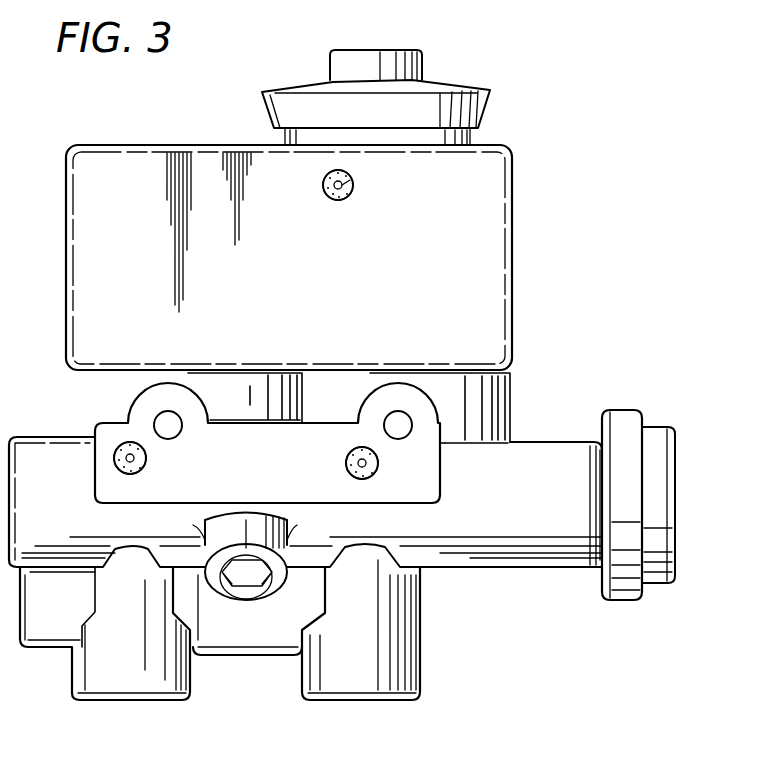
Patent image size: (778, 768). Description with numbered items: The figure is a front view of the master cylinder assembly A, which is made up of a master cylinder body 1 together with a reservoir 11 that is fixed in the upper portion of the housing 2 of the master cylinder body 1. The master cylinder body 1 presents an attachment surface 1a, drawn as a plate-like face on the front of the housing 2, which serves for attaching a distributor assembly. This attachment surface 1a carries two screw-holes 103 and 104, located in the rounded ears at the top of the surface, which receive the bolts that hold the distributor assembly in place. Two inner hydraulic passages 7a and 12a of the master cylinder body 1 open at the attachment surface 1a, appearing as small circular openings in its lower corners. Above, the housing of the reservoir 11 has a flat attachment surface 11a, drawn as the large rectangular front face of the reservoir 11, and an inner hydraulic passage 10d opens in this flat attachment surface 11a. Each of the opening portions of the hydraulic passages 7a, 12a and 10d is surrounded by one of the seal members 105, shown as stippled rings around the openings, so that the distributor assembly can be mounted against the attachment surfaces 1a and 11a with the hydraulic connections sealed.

The master cylinder body 1 is at (585, 568).
The attachment surface 1a is at (303, 480).
The housing 2 is at (516, 540).
The inner hydraulic passage 7a is at (365, 466).
The inner hydraulic passage 10d is at (353, 183).
The reservoir 11 is at (480, 232).
The flat attachment surface 11a is at (306, 278).
The inner hydraulic passage 12a is at (134, 461).
The screw-hole 103 is at (410, 425).
The screw-hole 104 is at (172, 432).
The seal members 105 is at (326, 199).
The master cylinder assembly A is at (532, 699).